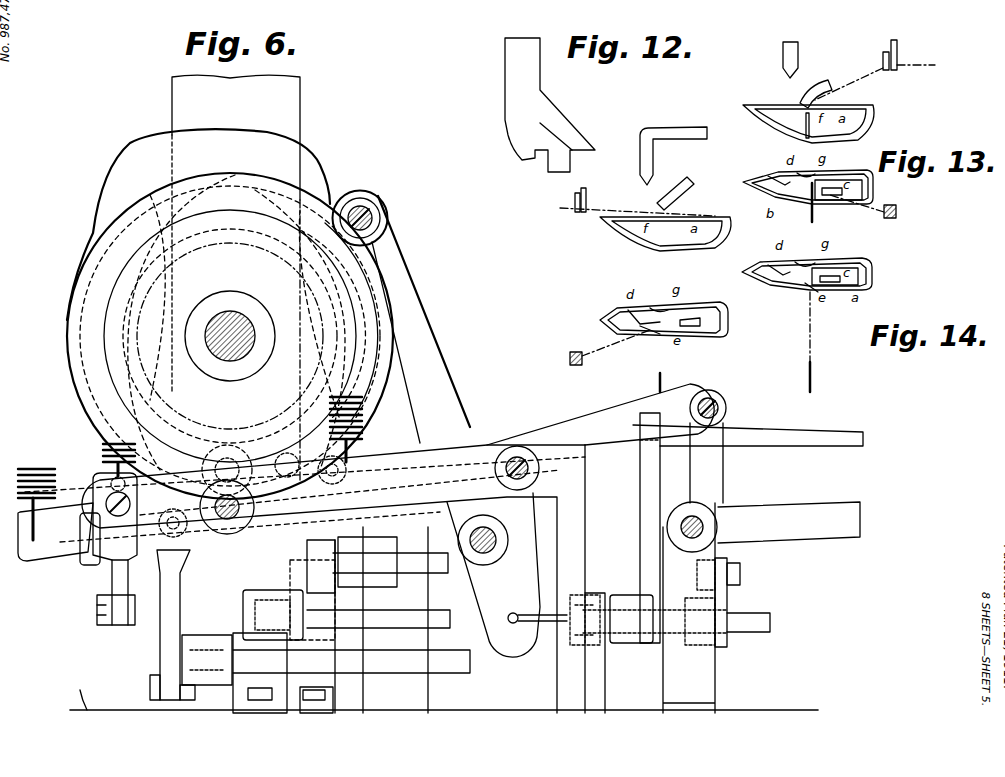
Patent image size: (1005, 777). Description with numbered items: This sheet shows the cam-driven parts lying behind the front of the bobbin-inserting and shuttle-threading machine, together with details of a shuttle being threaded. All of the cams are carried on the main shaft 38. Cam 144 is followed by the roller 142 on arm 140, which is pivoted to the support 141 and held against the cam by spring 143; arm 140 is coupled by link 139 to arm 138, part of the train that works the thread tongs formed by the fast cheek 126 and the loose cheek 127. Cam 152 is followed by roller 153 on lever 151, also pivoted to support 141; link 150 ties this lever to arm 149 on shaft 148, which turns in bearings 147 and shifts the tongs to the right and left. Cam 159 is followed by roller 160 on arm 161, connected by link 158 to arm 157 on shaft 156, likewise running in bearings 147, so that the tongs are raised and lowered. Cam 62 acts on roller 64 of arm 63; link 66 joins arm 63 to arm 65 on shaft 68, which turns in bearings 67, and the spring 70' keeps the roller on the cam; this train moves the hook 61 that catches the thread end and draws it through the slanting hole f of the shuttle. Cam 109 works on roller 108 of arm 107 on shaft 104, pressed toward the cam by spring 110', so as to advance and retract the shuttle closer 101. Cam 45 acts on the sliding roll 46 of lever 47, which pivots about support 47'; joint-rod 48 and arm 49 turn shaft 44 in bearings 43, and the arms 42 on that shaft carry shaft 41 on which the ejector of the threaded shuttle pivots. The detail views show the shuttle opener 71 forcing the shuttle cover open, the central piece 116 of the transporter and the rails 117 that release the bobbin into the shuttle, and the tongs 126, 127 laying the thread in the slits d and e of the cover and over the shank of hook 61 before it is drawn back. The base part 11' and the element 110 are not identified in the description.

In FIG. 6, the frame base 11' is at (85, 693).
In FIG. 6, the main shaft 38 is at (251, 340).
In FIG. 6, the shaft 41 is at (748, 435).
In FIG. 6, the arms 42 is at (635, 528).
In FIG. 6, the bearings 43 is at (607, 653).
In FIG. 6, the shaft 44 is at (771, 631).
In FIG. 6, the cam 45 is at (143, 322).
In FIG. 6, the sliding roll 46 is at (177, 518).
In FIG. 6, the lever 47 is at (55, 532).
In FIG. 6, the support 47' is at (435, 599).
In FIG. 6, the joint-rod 48 is at (761, 551).
In FIG. 6, the arm 49 is at (727, 599).
In FIG. 6, the hook 61 is at (662, 381).
In FIG. 13, the hook 61 is at (813, 228).
In FIG. 14, the hook 61 is at (813, 380).
In FIG. 6, the cam 62 is at (67, 306).
In FIG. 6, the arm 63 is at (88, 568).
In FIG. 6, the roller 64 is at (227, 523).
In FIG. 6, the arm 65 is at (195, 700).
In FIG. 6, the link 66 is at (180, 613).
In FIG. 6, the bearings 67 is at (258, 688).
In FIG. 6, the shaft 68 is at (351, 661).
In FIG. 6, the spring 70' is at (364, 429).
In FIG. 12, the shuttle-opener 71 is at (648, 160).
In FIG. 13, the shuttle-opener 71 is at (799, 57).
In FIG. 12, the shuttle closer 101 is at (690, 186).
In FIG. 13, the shuttle closer 101 is at (803, 95).
In FIG. 6, the shaft 104 is at (509, 540).
In FIG. 6, the arm 107 is at (438, 346).
In FIG. 6, the roller 108 is at (388, 223).
In FIG. 6, the cam 109 is at (312, 150).
In FIG. 6, the pin 110 is at (554, 634).
In FIG. 6, the spring 110' is at (551, 590).
In FIG. 12, the central piece 116 is at (560, 137).
In FIG. 12, the rails 117 is at (550, 105).
In FIG. 12, the fast cheek 126 is at (587, 201).
In FIG. 13, the fast cheek 126 is at (898, 66).
In FIG. 12, the loose cheek 127 is at (574, 196).
In FIG. 13, the loose cheek 127 is at (883, 57).
In FIG. 6, the arm 138 is at (128, 597).
In FIG. 6, the link 139 is at (100, 605).
In FIG. 6, the arm 140 is at (111, 516).
In FIG. 6, the support 141 is at (556, 498).
In FIG. 6, the roller 142 is at (227, 616).
In FIG. 6, the spring 143 is at (103, 452).
In FIG. 6, the cam 144 is at (140, 411).
In FIG. 6, the bearings 147 is at (333, 642).
In FIG. 6, the shaft 148 is at (390, 563).
In FIG. 6, the arm 149 is at (397, 540).
In FIG. 6, the link 150 is at (18, 497).
In FIG. 6, the lever 151 is at (100, 468).
In FIG. 6, the cam 152 is at (126, 365).
In FIG. 6, the roller 153 is at (223, 447).
In FIG. 6, the shaft 156 is at (378, 619).
In FIG. 6, the arm 157 is at (290, 596).
In FIG. 6, the link 158 is at (290, 569).
In FIG. 6, the cam 159 is at (120, 361).
In FIG. 6, the roller 160 is at (251, 450).
In FIG. 6, the arm 161 is at (106, 486).